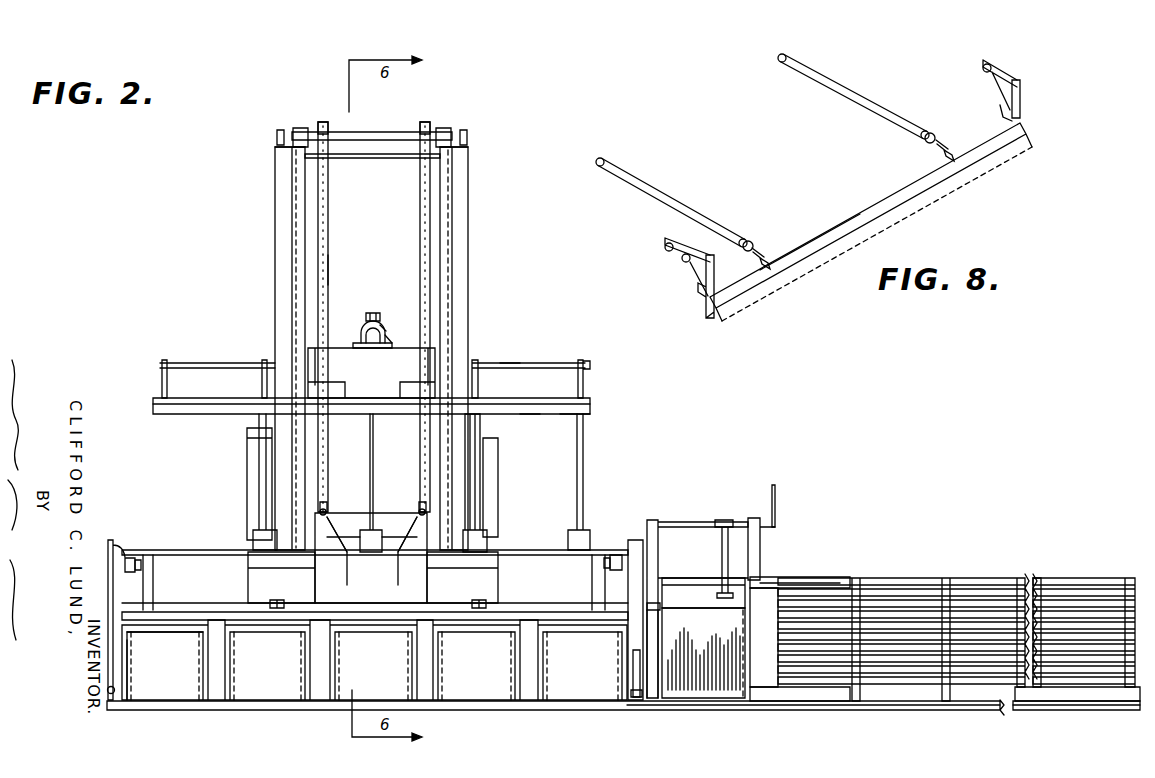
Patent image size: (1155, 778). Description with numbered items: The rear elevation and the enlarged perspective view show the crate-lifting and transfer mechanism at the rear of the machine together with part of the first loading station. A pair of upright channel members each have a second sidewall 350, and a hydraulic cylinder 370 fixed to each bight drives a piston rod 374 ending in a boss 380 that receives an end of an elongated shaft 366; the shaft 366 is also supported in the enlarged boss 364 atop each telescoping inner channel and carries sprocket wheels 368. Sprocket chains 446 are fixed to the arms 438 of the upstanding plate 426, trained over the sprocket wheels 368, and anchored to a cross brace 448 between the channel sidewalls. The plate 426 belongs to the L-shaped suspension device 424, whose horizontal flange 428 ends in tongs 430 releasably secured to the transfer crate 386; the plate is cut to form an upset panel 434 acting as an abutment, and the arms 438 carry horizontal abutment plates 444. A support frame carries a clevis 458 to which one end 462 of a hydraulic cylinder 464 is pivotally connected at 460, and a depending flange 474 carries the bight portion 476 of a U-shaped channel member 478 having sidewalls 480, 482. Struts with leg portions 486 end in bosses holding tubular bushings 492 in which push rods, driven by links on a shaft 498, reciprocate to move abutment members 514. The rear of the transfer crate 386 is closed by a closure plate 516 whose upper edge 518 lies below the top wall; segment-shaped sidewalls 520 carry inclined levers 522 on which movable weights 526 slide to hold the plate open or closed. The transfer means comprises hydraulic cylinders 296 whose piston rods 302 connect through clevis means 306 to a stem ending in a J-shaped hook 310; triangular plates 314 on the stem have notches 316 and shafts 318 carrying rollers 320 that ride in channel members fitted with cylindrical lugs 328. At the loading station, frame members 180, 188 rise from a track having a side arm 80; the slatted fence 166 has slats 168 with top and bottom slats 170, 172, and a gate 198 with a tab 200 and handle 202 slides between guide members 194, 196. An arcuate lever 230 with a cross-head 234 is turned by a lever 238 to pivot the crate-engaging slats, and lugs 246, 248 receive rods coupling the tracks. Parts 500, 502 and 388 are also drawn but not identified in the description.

In FIG. 2, the hydraulic cylinder 370 is at (274, 207).
In FIG. 2, the second sidewall 350 is at (326, 219).
In FIG. 2, the elongated shaft 366 is at (394, 132).
In FIG. 2, the sprocket wheels 368 is at (332, 126).
In FIG. 2, the cross brace 448 is at (376, 158).
In FIG. 2, the boss 380 is at (281, 128).
In FIG. 2, the enlarged boss 364 is at (300, 126).
In FIG. 2, the piston rod 374 is at (275, 145).
In FIG. 2, the sprocket chains 446 is at (328, 270).
In FIG. 2, the downwardly-depending flange 474 is at (317, 353).
In FIG. 2, the clevis 458 is at (362, 330).
In FIG. 2, the bearing cap 502 is at (382, 308).
In FIG. 2, the hydraulic cylinder 464 is at (386, 324).
In FIG. 2, the pivotal connection 460 is at (384, 336).
In FIG. 2, the end of hydraulic cylinder 462 is at (374, 348).
In FIG. 2, the guard rails 500 is at (168, 386).
In FIG. 2, the shaft 498 is at (514, 362).
In FIG. 2, the sidewall 480 is at (590, 396).
In FIG. 2, the bight portion 476 is at (590, 403).
In FIG. 2, the sidewall 482 is at (590, 414).
In FIG. 2, the U-shaped channel member 478 is at (528, 416).
In FIG. 2, the leg portion 486 is at (480, 488).
In FIG. 2, the upstanding plate 426 is at (315, 575).
In FIG. 2, the L-shaped suspension device 424 is at (432, 576).
In FIG. 2, the upset panel 434 is at (371, 558).
In FIG. 2, the hollow tubular bushing 492 is at (370, 495).
In FIG. 2, the abutment plate 444 is at (322, 508).
In FIG. 2, the arms 438 is at (330, 514).
In FIG. 2, the horizontally-extending flange 428 is at (362, 609).
In FIG. 2, the tongs 430 is at (280, 610).
In FIG. 2, the triangular plates 314 is at (153, 582).
In FIG. 8, the triangular plates 314 is at (694, 266).
In FIG. 2, the shafts 318 is at (134, 558).
In FIG. 8, the shafts 318 is at (995, 74).
In FIG. 2, the cylindrical lugs 328 is at (129, 538).
In FIG. 8, the cylindrical lugs 328 is at (678, 260).
In FIG. 2, the rollers 320 is at (110, 540).
In FIG. 8, the rollers 320 is at (1014, 77).
In FIG. 2, the abutment members 514 is at (586, 530).
In FIG. 2, the transfer crate 386 is at (574, 712).
In FIG. 2, the closure plate 516 is at (164, 706).
In FIG. 2, the upper edge 518 is at (163, 634).
In FIG. 2, the segment-shaped sidewall 520 is at (126, 682).
In FIG. 2, the lever 522 is at (110, 696).
In FIG. 2, the movable weight 526 is at (633, 663).
In FIG. 2, the lug 248 is at (649, 700).
In FIG. 2, the lug 246 is at (658, 608).
In FIG. 2, the frame member 180 is at (658, 558).
In FIG. 2, the frame member 188 is at (760, 552).
In FIG. 2, the arcuate lever 230 is at (722, 558).
In FIG. 2, the cross-head 234 is at (730, 602).
In FIG. 2, the lever 238 is at (775, 488).
In FIG. 2, the gate 198 is at (722, 704).
In FIG. 2, the handle 202 is at (780, 648).
In FIG. 2, the tab 200 is at (782, 577).
In FIG. 2, the inverted U-shaped guide member 194 is at (802, 578).
In FIG. 2, the U-shaped guide member 196 is at (799, 702).
In FIG. 2, the side arm 80 is at (929, 710).
In FIG. 2, the partition wall or slatted fence 166 is at (977, 573).
In FIG. 2, the top slat 170 is at (1105, 578).
In FIG. 2, the slats 168 is at (1070, 670).
In FIG. 2, the bottom slat 172 is at (1096, 700).
In FIG. 8, the J-shaped hook 310 is at (866, 242).
In FIG. 8, the beam top surface 388 is at (858, 200).
In FIG. 8, the hydraulic cylinders 296 is at (668, 210).
In FIG. 8, the piston rod 302 is at (754, 240).
In FIG. 8, the clevis means 306 is at (772, 248).
In FIG. 8, the notch 316 is at (706, 290).